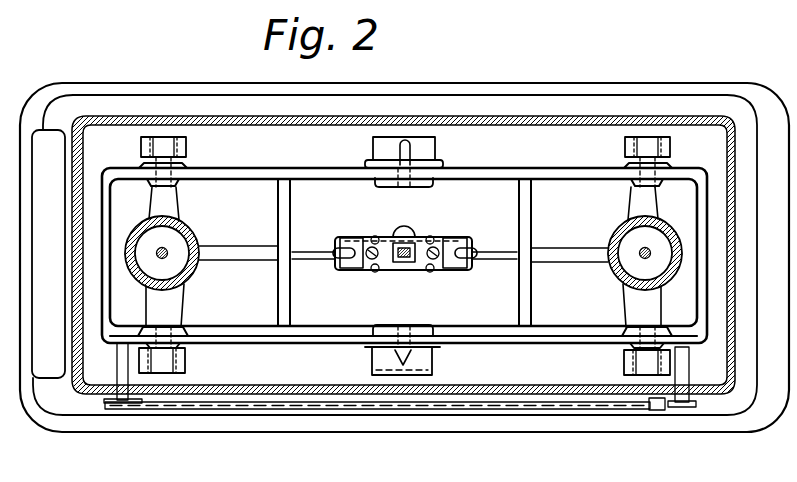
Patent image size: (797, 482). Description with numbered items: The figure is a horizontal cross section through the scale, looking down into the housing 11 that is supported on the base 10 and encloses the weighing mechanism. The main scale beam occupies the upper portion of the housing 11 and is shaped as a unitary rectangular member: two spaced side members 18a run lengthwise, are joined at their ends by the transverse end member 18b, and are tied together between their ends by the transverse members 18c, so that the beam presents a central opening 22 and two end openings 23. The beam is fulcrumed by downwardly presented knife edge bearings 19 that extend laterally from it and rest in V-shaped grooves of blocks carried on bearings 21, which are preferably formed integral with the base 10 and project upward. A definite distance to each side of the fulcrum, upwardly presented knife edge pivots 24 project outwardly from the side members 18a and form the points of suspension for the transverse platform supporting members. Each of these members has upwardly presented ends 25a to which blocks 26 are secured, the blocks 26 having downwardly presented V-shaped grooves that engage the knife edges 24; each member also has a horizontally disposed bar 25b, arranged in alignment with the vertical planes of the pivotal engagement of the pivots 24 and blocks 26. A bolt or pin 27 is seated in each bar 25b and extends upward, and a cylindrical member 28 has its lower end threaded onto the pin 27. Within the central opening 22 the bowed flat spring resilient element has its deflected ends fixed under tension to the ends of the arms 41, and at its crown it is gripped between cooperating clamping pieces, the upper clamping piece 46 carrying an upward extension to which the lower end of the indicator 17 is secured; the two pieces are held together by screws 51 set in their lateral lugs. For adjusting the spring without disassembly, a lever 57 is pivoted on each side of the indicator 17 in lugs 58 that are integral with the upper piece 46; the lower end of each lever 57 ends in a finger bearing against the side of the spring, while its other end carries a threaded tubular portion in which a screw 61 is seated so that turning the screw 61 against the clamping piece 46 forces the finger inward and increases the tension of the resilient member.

The base 10 is at (303, 418).
The housing 11 is at (425, 393).
The indicator 17 is at (405, 263).
The side members 18a is at (284, 158).
The end member 18b is at (48, 445).
The transverse members 18c is at (577, 158).
The knife edge bearings 19 is at (404, 150).
The bearings 21 is at (373, 150).
The central opening 22 is at (463, 200).
The end openings 23 is at (122, 190).
The knife edge pivots 24 is at (162, 148).
The upwardly presented ends 25a is at (574, 443).
The horizontally disposed bar 25b is at (668, 303).
The blocks 26 is at (187, 150).
The bolt or pin 27 is at (167, 250).
The cylindrical member 28 is at (192, 280).
The arms 41 is at (559, 249).
The upper clamping piece 46 is at (388, 238).
The screws 51 is at (373, 237).
The lever 57 is at (352, 252).
The lugs 58 is at (448, 243).
The screw 61 is at (370, 259).